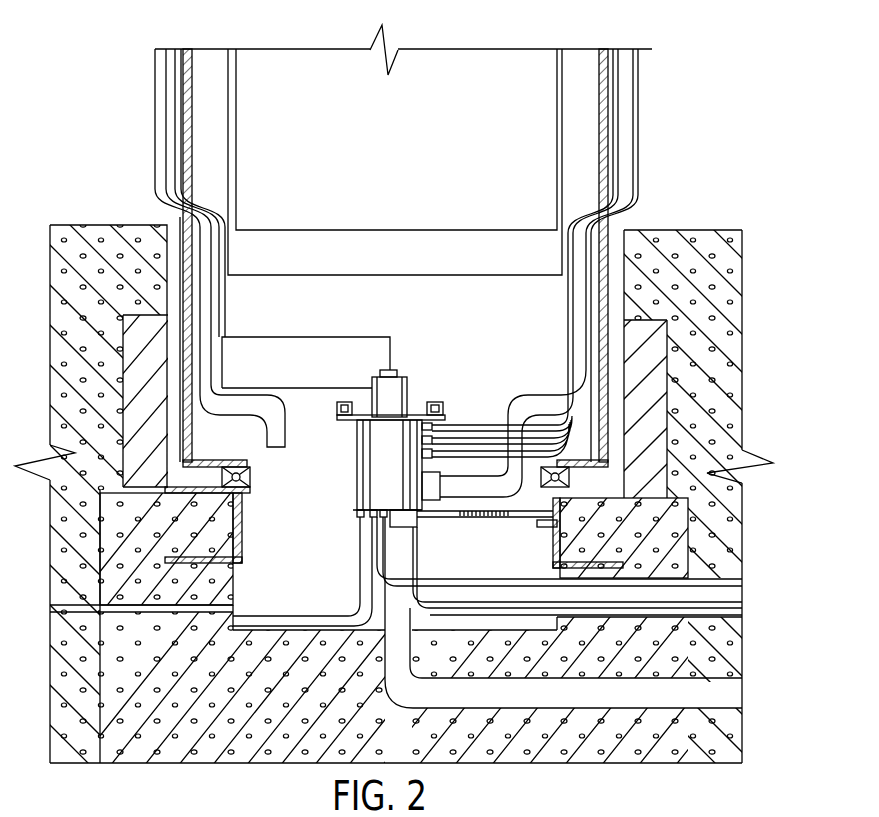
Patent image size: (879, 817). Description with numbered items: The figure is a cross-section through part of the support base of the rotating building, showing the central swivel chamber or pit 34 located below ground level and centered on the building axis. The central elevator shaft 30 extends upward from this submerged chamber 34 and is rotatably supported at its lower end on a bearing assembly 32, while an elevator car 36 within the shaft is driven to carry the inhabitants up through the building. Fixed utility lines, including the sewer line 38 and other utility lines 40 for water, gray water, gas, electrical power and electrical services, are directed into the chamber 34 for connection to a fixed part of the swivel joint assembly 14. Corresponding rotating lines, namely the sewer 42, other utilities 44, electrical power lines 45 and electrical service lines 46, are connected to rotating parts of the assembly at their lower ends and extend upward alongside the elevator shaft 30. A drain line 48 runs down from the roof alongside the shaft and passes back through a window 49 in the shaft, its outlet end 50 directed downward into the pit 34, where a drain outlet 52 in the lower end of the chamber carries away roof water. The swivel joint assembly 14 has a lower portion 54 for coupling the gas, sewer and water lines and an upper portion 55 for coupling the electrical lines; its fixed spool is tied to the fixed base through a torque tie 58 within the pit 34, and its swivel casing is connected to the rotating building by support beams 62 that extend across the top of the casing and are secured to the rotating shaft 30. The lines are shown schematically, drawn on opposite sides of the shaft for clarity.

The swivel joint assembly 14 is at (455, 386).
The central elevator shaft 30 is at (605, 76).
The bearing assembly 32 is at (237, 467).
The central swivel chamber or pit 34 is at (465, 554).
The elevator car 36 is at (490, 68).
The sewer line 38 is at (724, 598).
The other utility lines 40 is at (372, 590).
The sewer 42 is at (636, 128).
The other utilities 44 is at (463, 460).
The electrical power lines 45 is at (282, 386).
The electrical service lines 46 is at (333, 337).
The drain line 48 is at (155, 186).
The window 49 is at (188, 195).
The outlet end 50 is at (280, 452).
The drain outlet 52 is at (724, 694).
The lower portion 54 is at (370, 452).
The upper portion 55 is at (380, 384).
The torque tie 58 is at (487, 518).
The support beams 62 is at (441, 400).